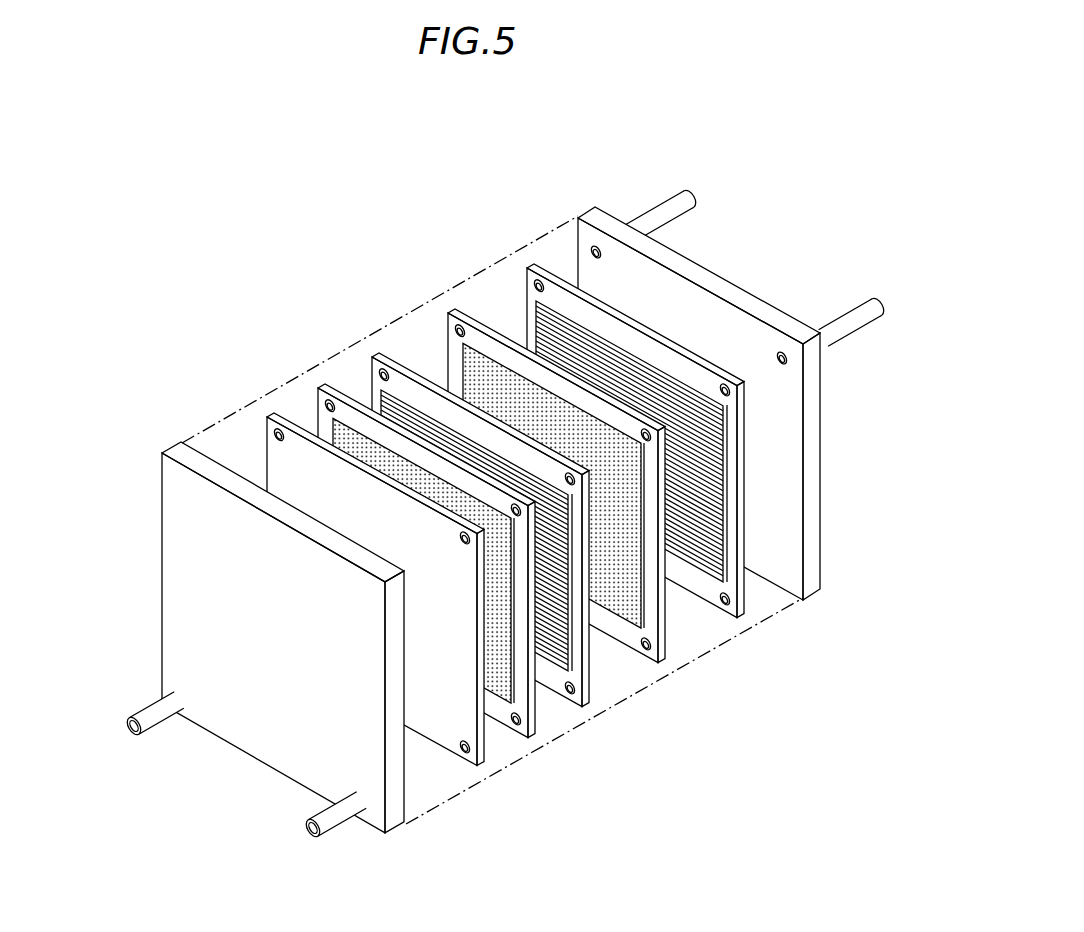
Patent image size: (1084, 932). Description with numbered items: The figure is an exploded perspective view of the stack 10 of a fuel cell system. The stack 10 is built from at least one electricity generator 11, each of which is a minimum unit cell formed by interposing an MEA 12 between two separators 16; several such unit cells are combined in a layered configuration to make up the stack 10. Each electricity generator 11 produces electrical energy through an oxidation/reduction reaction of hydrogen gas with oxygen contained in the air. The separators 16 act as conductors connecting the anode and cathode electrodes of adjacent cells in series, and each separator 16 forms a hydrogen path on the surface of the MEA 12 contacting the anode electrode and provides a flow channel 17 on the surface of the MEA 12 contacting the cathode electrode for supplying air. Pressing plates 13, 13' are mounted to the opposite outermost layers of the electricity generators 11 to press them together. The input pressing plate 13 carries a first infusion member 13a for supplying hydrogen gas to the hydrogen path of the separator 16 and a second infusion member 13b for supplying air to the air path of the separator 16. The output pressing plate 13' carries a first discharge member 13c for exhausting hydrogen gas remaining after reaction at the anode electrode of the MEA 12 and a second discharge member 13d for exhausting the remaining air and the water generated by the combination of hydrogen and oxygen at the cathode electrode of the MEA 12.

The stack 10 is at (789, 189).
The electricity generator 11 is at (530, 535).
The MEA 12 is at (511, 532).
The input pressing plate 13 is at (728, 403).
The output pressing plate 13' is at (300, 671).
The first infusion member 13a is at (665, 203).
The second infusion member 13b is at (860, 331).
The first discharge member 13c is at (335, 829).
The second discharge member 13d is at (148, 708).
The separator 16 is at (587, 722).
The flow channel 17 is at (698, 563).